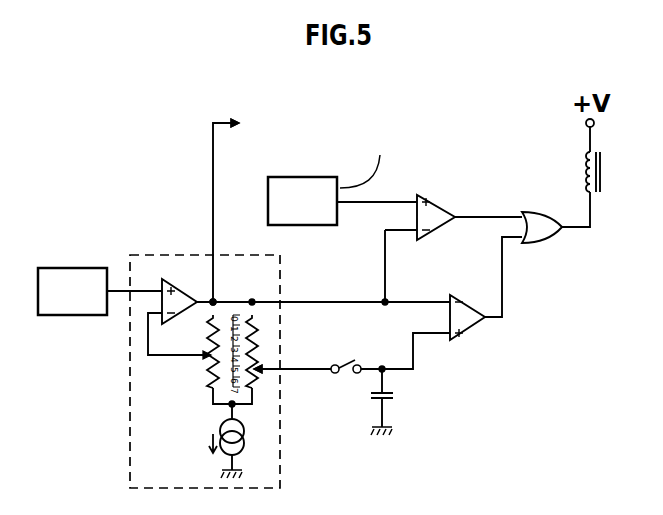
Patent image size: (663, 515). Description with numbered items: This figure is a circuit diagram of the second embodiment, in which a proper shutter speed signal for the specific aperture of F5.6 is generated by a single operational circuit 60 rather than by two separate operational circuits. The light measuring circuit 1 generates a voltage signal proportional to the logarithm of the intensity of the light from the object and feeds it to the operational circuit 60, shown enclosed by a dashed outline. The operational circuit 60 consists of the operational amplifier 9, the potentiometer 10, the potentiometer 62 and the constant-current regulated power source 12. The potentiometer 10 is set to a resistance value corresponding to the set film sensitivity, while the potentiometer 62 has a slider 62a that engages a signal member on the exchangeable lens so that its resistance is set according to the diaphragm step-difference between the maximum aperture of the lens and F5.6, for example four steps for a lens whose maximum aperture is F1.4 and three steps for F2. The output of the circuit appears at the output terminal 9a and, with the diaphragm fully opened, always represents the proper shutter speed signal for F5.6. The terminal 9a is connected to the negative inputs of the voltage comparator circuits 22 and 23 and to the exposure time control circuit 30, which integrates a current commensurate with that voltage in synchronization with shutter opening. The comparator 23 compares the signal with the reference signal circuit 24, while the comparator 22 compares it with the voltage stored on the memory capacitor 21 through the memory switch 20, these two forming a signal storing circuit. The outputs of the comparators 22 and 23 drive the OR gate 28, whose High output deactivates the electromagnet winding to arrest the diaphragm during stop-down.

The light measuring circuit 1 is at (82, 268).
The operational amplifier 9 is at (164, 279).
The output terminal 9a is at (235, 300).
The potentiometer 10 is at (206, 360).
The constant-current regulated power source 12 is at (213, 440).
The memory switch 20 is at (351, 360).
The memory capacitor 21 is at (393, 395).
The operational amplifier (voltage comparator circuit) 22 is at (465, 330).
The operational amplifier (voltage comparator circuit) 23 is at (449, 191).
The reference signal circuit 24 is at (316, 178).
The OR gate 28 is at (542, 211).
The exposure time control circuit 30 is at (253, 123).
The operational circuit 60 is at (158, 253).
The potentiometer 62 is at (256, 347).
The slider 62a is at (272, 371).